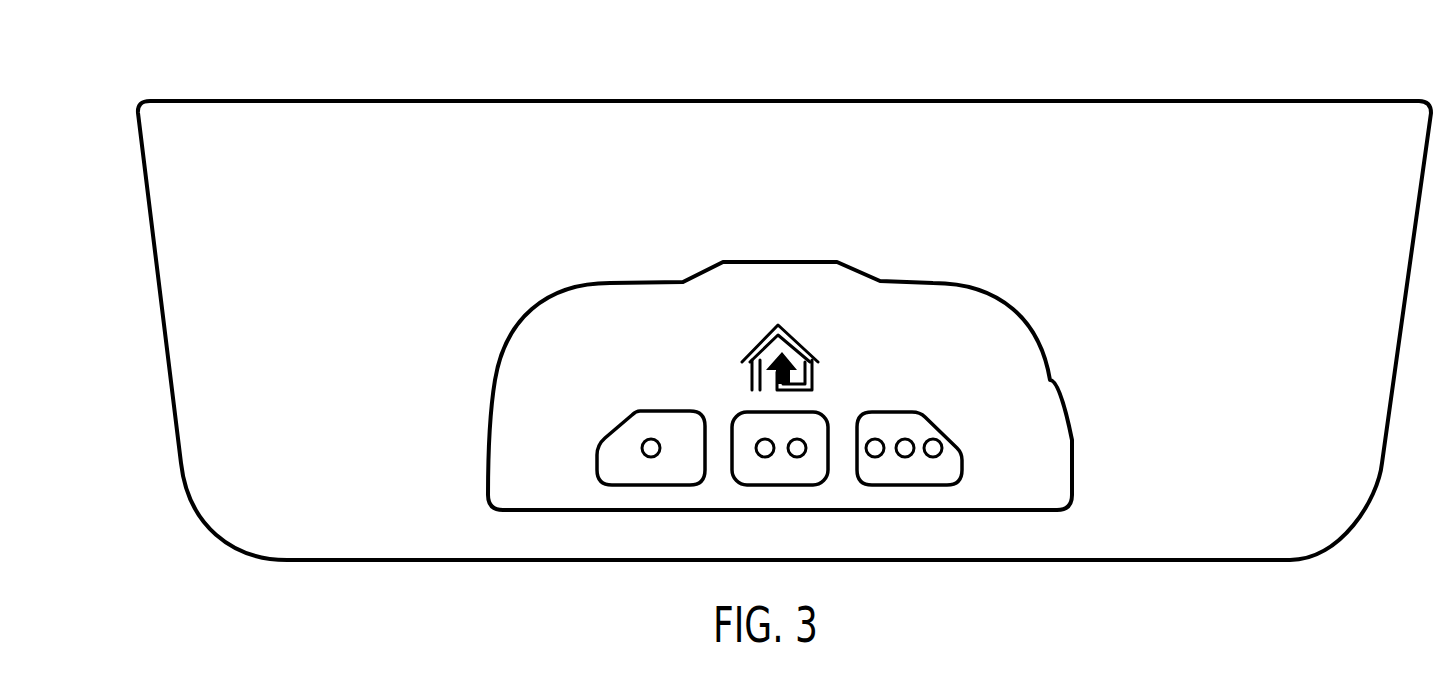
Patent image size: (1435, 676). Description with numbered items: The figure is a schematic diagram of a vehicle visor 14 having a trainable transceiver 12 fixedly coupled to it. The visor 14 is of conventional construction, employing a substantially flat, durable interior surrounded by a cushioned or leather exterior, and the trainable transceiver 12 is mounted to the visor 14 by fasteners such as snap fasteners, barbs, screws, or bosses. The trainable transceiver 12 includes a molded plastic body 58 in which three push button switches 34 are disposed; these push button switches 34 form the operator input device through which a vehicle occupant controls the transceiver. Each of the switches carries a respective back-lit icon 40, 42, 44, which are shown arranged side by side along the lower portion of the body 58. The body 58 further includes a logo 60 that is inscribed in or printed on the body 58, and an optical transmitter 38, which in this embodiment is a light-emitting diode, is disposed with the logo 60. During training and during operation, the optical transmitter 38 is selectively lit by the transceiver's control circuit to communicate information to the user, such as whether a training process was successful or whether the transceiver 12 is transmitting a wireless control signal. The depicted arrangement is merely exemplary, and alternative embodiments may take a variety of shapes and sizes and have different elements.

The visor 14 is at (1173, 102).
The trainable transceiver 12 is at (812, 262).
The push button switches 34 is at (1002, 462).
The molded plastic body 58 is at (722, 307).
The logo 60 is at (773, 320).
The optical transmitter 38 is at (793, 358).
The back-lit icon 40 is at (651, 445).
The back-lit icon 42 is at (797, 448).
The back-lit icon 44 is at (933, 448).